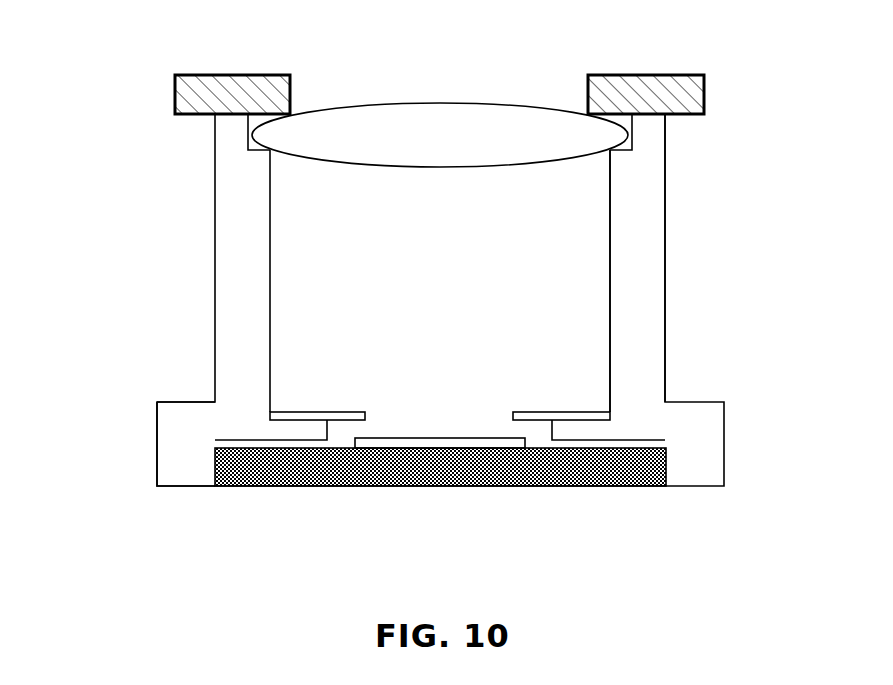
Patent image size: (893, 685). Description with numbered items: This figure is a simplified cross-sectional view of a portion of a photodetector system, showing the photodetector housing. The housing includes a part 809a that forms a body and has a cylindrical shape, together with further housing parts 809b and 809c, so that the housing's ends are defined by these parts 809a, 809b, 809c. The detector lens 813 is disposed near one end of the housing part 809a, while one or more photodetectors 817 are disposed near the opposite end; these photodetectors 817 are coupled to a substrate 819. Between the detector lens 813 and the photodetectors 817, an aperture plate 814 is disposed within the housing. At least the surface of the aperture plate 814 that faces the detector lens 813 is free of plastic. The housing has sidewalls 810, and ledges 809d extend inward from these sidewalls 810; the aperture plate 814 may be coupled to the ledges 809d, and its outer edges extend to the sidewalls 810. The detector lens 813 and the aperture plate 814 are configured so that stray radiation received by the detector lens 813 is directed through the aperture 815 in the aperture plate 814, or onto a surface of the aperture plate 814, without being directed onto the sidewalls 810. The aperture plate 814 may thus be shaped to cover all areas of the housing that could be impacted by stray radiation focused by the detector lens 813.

The part of the photodetector housing 809a is at (650, 268).
The part of the photodetector housing 809b is at (223, 90).
The part of the photodetector housing 809c is at (172, 450).
The ledges 809d is at (588, 430).
The sidewalls 810 is at (273, 292).
The detector lens 813 is at (423, 120).
The aperture plate 814 is at (313, 408).
The aperture 815 is at (447, 398).
The photodetectors 817 is at (373, 442).
The substrate 819 is at (278, 478).